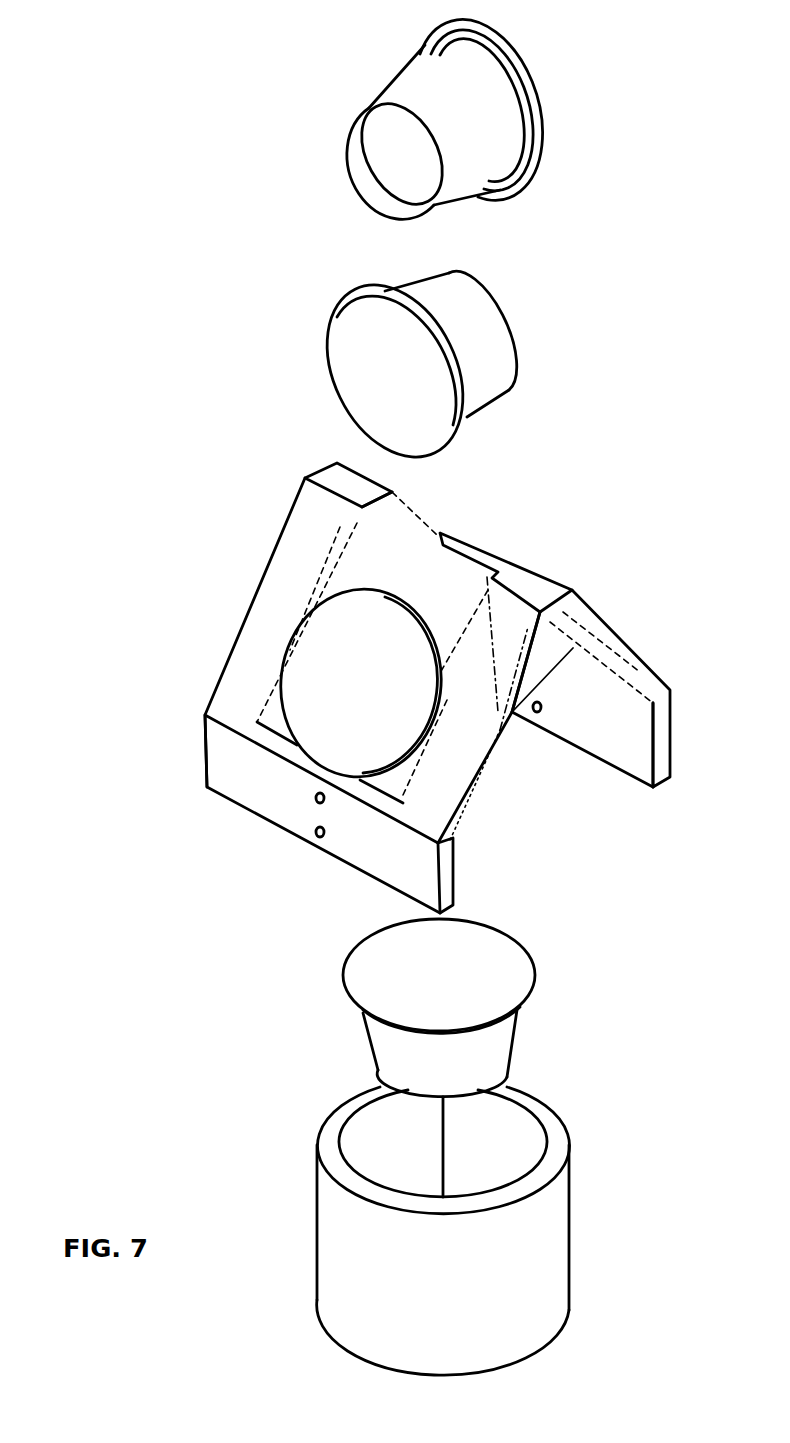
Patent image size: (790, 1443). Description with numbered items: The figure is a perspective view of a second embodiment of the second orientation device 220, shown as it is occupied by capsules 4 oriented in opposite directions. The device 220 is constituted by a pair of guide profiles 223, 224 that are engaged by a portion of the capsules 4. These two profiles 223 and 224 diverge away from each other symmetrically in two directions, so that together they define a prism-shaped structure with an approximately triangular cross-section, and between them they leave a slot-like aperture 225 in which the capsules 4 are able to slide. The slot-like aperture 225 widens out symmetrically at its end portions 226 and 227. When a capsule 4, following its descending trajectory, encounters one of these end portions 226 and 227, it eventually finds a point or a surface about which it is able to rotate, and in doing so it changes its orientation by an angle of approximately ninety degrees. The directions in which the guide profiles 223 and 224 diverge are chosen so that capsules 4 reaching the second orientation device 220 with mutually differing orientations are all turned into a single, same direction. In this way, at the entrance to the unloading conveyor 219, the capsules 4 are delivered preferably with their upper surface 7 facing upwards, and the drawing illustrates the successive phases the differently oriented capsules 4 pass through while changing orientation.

The capsule 4 is at (325, 67).
The upper surface 7 is at (487, 952).
The unloading conveyor 219 is at (545, 1272).
The second orientation device 220 is at (300, 536).
The guide profile 223 is at (333, 585).
The guide profile 224 is at (457, 643).
The slot-like aperture 225 is at (370, 563).
The end portion 226 is at (272, 733).
The end portion 227 is at (565, 648).